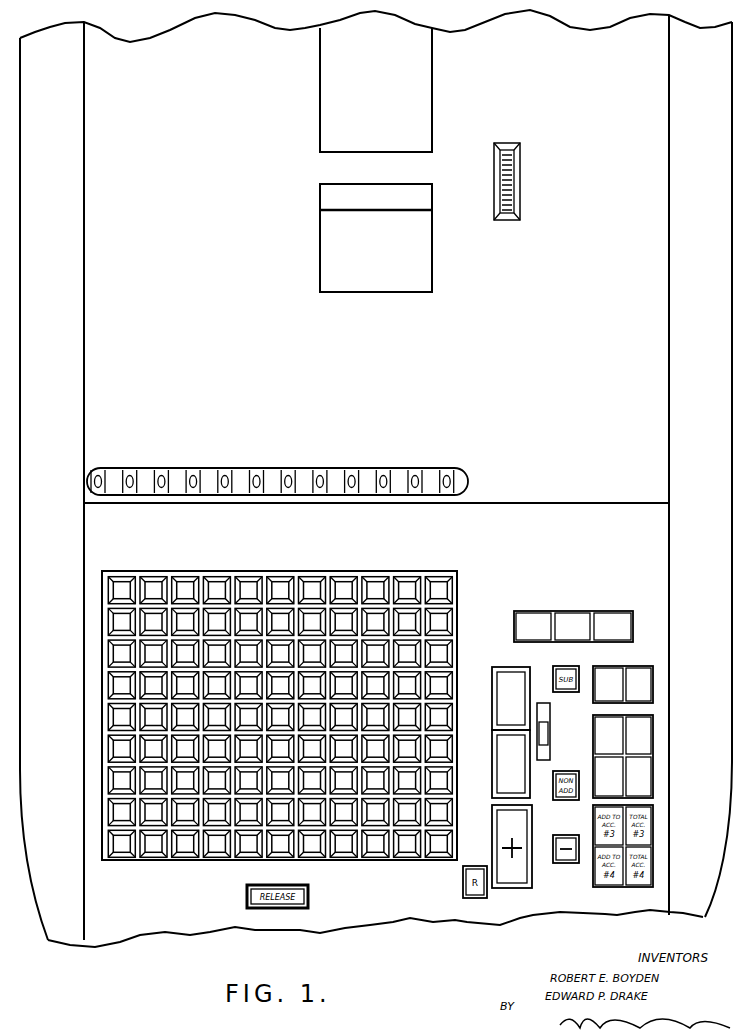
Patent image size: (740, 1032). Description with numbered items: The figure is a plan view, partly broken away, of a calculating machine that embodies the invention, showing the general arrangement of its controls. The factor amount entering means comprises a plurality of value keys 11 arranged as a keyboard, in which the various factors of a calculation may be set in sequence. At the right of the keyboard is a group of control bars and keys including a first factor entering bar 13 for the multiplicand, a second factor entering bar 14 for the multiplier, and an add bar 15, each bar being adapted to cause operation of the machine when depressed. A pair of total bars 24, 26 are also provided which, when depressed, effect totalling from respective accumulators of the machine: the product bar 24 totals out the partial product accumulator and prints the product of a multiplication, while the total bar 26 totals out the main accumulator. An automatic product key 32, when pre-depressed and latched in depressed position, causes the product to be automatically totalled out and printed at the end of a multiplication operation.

The value keys 11 is at (115, 812).
The first factor entering bar 13 is at (492, 702).
The second factor entering bar 14 is at (492, 772).
The add bar 15 is at (498, 829).
The product bar 24 is at (653, 653).
The total bar 26 is at (643, 784).
The automatic product key 32 is at (632, 603).